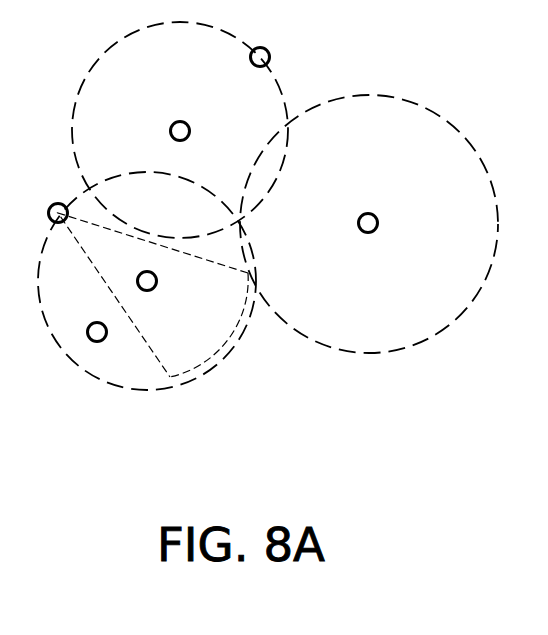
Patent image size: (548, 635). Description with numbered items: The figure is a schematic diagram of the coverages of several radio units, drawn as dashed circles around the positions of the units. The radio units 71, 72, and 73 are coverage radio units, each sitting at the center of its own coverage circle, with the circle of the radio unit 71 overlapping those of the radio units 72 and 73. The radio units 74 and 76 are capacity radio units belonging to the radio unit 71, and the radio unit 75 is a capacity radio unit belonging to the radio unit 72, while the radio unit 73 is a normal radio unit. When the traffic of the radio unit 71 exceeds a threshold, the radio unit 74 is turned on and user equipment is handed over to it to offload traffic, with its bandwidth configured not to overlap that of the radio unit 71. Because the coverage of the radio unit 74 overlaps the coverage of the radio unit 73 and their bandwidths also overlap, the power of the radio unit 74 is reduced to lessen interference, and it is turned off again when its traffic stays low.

The radio unit 71 is at (157, 283).
The radio unit 72 is at (173, 121).
The radio unit 73 is at (361, 214).
The radio unit 74 is at (51, 205).
The radio unit 75 is at (268, 50).
The radio unit 76 is at (88, 336).